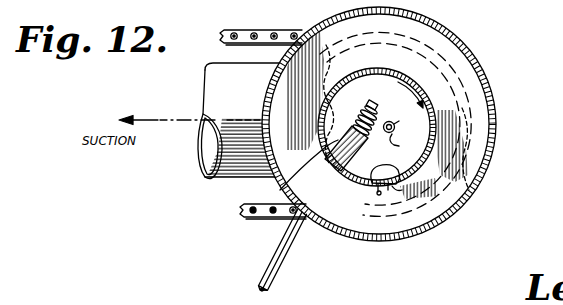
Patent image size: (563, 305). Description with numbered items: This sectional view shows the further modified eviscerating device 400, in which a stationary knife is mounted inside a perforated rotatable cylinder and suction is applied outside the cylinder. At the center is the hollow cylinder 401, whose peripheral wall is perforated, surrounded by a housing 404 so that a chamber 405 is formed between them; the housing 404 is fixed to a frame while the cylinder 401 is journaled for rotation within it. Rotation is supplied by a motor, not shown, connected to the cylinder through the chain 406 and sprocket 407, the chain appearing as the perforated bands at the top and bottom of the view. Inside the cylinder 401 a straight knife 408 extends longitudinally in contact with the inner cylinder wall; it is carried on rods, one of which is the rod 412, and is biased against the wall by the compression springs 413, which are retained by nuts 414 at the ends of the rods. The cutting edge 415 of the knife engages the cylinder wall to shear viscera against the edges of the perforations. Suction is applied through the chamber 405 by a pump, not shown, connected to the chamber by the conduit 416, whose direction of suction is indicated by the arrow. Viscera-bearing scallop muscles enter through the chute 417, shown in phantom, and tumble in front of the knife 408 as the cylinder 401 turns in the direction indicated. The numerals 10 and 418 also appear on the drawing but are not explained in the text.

The pump unit 10 is at (409, 190).
The further modified device 400 is at (504, 101).
The hollow cylinder 401 is at (430, 162).
The housing 404 is at (485, 167).
The chamber 405 is at (451, 61).
The chain 406 is at (282, 31).
The sprocket 407 is at (290, 92).
The straight knife 408 is at (285, 184).
The rod 412 is at (275, 256).
The compression spring 413 is at (350, 118).
The nut 414 is at (398, 95).
The cutting edge 415 is at (371, 190).
The conduit 416 is at (213, 105).
The chute 417 is at (395, 127).
The drain fitting 418 is at (408, 144).